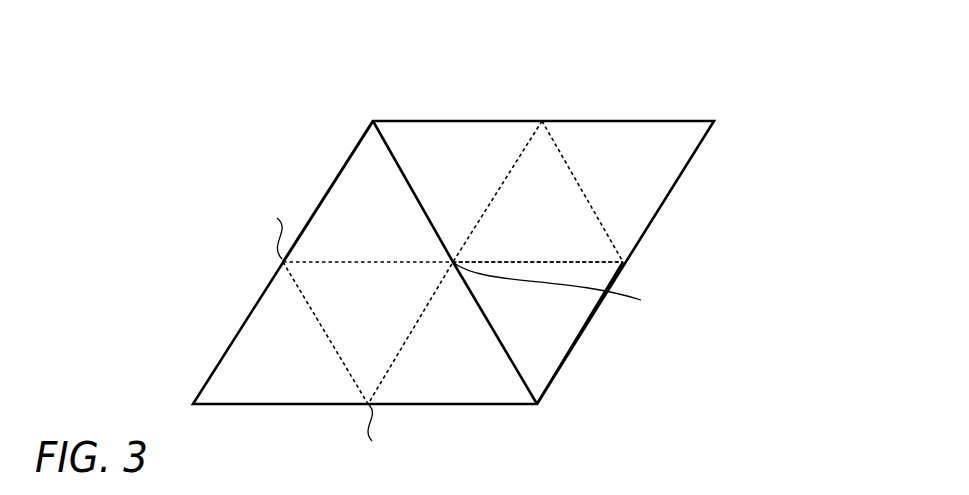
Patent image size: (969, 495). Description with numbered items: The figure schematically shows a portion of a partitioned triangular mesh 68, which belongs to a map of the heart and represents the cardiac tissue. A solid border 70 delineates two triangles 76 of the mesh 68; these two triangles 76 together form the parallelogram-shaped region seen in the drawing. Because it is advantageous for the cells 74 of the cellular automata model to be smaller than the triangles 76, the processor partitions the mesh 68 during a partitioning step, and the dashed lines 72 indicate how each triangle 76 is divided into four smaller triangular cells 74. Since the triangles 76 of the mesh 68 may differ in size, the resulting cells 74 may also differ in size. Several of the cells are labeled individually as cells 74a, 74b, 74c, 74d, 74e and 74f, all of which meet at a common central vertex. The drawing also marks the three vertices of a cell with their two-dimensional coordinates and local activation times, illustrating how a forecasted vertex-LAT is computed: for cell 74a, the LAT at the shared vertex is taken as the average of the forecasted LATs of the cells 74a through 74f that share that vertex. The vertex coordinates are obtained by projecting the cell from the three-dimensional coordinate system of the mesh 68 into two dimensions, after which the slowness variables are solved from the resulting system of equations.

The partitioned triangular mesh 68 is at (828, 95).
The solid border 70 is at (567, 356).
The dashed lines 72 is at (565, 155).
The cells 74 is at (634, 181).
The cell 74a is at (353, 321).
The cell 74b is at (353, 230).
The cell 74c is at (440, 181).
The cell 74d is at (522, 230).
The cell 74e is at (518, 320).
The cell 74f is at (442, 376).
The triangles 76 is at (347, 159).